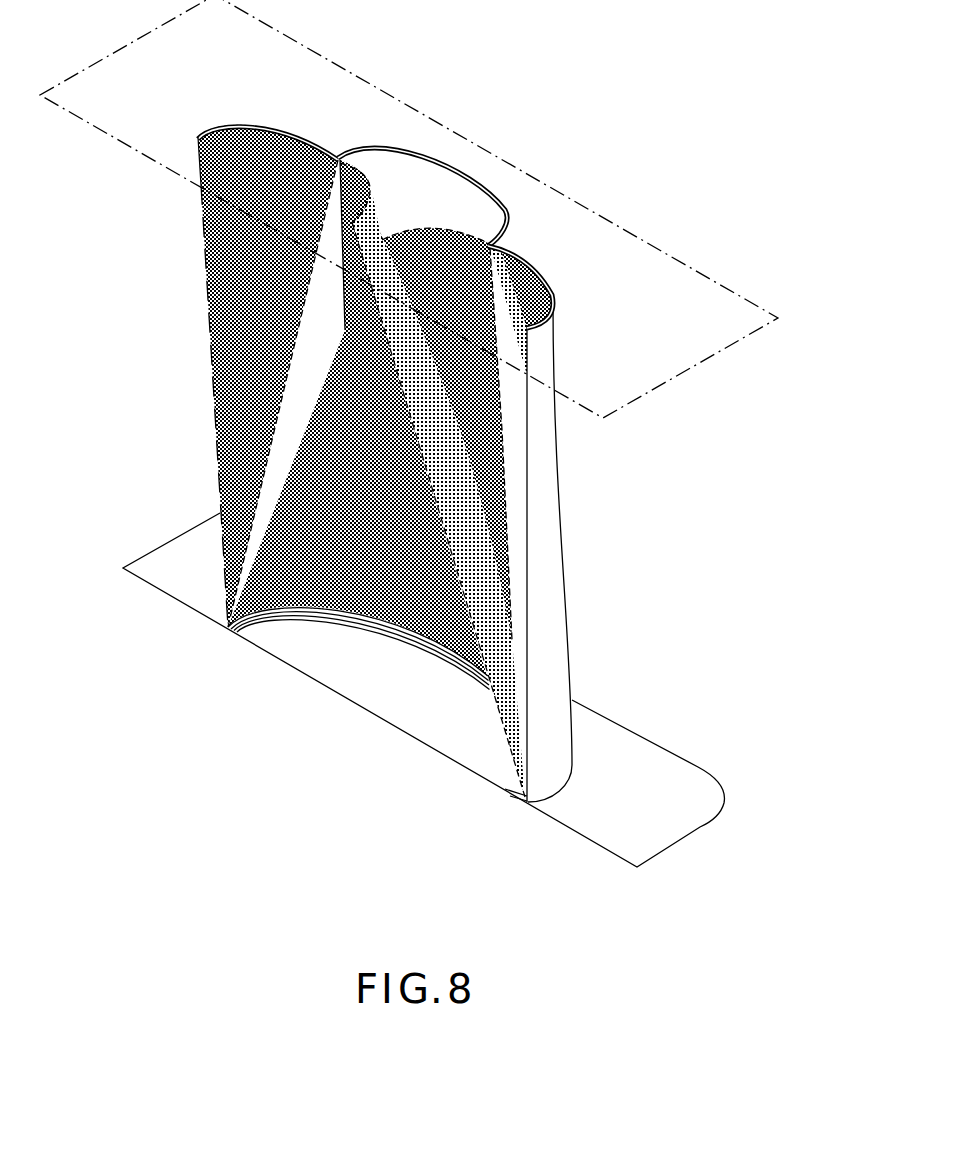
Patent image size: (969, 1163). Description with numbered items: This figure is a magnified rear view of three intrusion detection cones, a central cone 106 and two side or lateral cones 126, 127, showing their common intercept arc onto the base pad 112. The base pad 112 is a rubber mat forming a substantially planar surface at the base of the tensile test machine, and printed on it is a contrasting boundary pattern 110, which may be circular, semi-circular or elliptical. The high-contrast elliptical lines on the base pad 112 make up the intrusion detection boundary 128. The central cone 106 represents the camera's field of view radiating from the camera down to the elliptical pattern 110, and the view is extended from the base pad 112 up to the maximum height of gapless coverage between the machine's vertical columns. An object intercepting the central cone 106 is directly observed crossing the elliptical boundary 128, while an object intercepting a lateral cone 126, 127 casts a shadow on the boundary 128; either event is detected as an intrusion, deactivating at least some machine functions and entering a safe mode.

The conical intrusion detection zone 106 is at (467, 172).
The contrasting boundary pattern 110 is at (453, 660).
The base pad 112 is at (665, 783).
The lateral cone 126 is at (537, 268).
The lateral cone 127 is at (293, 131).
The intrusion detection boundary 128 is at (367, 622).